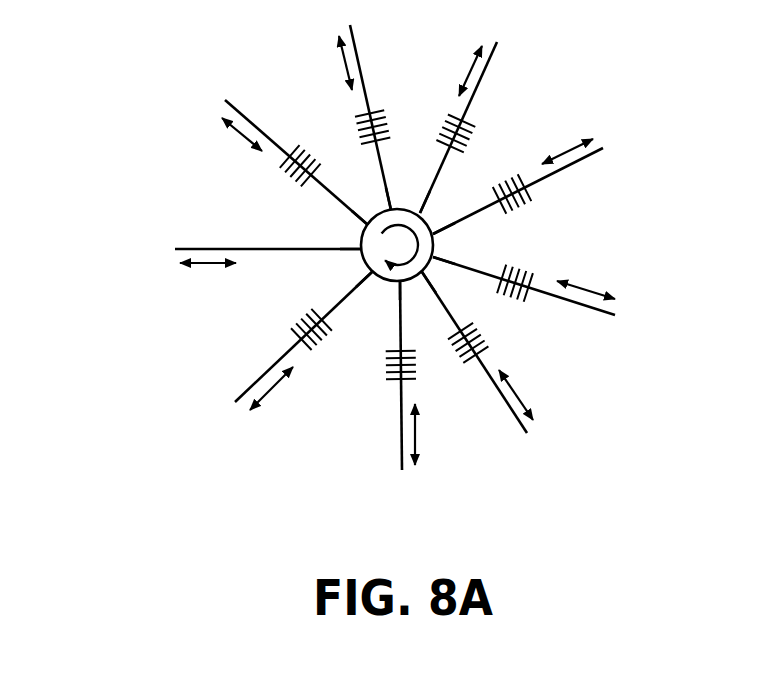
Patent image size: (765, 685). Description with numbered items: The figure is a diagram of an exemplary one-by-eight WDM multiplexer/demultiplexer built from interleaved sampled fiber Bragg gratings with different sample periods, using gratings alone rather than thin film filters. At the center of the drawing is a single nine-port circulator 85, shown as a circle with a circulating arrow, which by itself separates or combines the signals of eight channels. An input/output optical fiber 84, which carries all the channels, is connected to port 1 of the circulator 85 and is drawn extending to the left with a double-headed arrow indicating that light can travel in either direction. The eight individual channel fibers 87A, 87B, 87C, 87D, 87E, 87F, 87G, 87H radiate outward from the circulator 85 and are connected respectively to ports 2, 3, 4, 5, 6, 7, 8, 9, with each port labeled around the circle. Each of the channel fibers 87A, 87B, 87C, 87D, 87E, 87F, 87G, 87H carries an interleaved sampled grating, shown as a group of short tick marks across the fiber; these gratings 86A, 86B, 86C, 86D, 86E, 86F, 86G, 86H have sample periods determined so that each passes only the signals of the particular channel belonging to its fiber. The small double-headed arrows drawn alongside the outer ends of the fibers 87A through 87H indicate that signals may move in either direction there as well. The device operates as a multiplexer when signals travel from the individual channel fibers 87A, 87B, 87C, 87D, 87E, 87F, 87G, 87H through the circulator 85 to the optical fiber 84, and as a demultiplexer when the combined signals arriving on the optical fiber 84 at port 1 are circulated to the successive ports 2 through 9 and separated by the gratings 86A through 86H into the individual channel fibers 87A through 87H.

The input/output optical fiber 84 is at (185, 249).
The nine-port circulator 85 is at (363, 229).
The interleaved sampled grating 86A is at (310, 177).
The interleaved sampled grating 86B is at (388, 120).
The interleaved sampled grating 86C is at (467, 140).
The interleaved sampled grating 86D is at (523, 207).
The interleaved sampled grating 86E is at (510, 297).
The interleaved sampled grating 86F is at (462, 357).
The interleaved sampled grating 86G is at (387, 372).
The interleaved sampled grating 86H is at (298, 330).
The individual channel fiber 87A is at (238, 108).
The individual channel fiber 87B is at (355, 44).
The individual channel fiber 87C is at (488, 73).
The individual channel fiber 87D is at (568, 165).
The individual channel fiber 87E is at (583, 305).
The individual channel fiber 87F is at (512, 417).
The individual channel fiber 87G is at (400, 423).
The individual channel fiber 87H is at (265, 373).
The port 1 is at (341, 233).
The port 2 is at (358, 200).
The port 3 is at (396, 185).
The port 4 is at (433, 198).
The port 5 is at (452, 236).
The port 6 is at (449, 277).
The port 7 is at (427, 299).
The port 8 is at (389, 306).
The port 9 is at (352, 281).